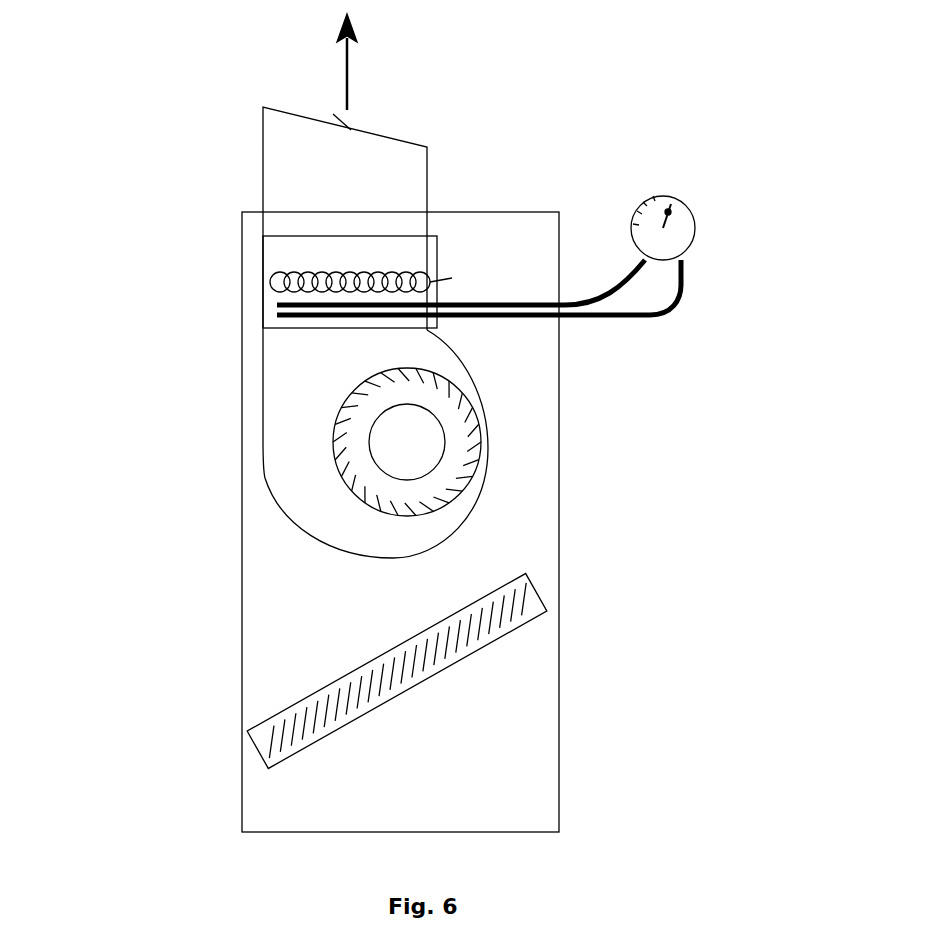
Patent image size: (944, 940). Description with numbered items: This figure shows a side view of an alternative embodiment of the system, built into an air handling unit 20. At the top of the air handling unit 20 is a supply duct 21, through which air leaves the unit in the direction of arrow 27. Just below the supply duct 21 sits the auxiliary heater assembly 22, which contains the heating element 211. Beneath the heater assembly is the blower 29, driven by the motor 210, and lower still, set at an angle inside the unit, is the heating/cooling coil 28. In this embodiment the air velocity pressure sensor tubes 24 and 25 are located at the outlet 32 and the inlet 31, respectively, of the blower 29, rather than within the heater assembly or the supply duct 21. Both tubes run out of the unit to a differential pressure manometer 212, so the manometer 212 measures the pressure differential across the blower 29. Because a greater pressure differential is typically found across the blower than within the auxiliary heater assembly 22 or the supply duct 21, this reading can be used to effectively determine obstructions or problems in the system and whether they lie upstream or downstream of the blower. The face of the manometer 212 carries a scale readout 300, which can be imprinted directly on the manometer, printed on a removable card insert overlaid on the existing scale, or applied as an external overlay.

The air handling unit 20 is at (238, 780).
The supply duct 21 is at (430, 177).
The auxiliary heater assembly 22 is at (298, 335).
The air velocity pressure sensor tube 24 is at (650, 278).
The air velocity pressure sensor tube 25 is at (674, 302).
The arrow 27 is at (362, 62).
The heating/cooling coil 28 is at (499, 646).
The blower 29 is at (485, 492).
The inlet 31 is at (400, 443).
The outlet 32 is at (340, 371).
The motor 210 is at (452, 448).
The heating element 211 is at (270, 283).
The differential pressure manometer 212 is at (688, 196).
The scale readout 300 is at (684, 226).